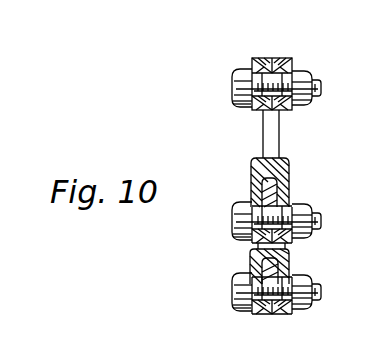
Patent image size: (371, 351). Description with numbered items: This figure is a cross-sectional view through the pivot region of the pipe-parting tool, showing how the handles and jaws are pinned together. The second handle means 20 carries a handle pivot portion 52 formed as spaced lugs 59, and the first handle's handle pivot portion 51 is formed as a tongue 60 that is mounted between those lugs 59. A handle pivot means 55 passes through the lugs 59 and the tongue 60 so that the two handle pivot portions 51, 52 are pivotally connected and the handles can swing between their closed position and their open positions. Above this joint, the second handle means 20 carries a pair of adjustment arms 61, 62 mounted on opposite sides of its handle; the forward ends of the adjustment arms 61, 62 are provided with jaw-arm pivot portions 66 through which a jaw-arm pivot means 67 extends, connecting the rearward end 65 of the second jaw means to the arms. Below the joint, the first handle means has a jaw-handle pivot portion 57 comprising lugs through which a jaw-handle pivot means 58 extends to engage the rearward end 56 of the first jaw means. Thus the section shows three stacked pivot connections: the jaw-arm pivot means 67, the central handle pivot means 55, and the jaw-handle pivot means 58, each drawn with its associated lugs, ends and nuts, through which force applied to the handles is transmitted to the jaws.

The second handle element means 20 is at (280, 136).
The handle pivot portion 51 is at (256, 251).
The handle pivot portion 52 is at (252, 166).
The handle pivot means 55 is at (242, 234).
The rearward end of the first jaw means 56 is at (272, 314).
The jaw-handle pivot portion 57 is at (292, 267).
The jaw-handle pivot means 58 is at (321, 295).
The spaced lugs 59 is at (256, 236).
The tongue 60 is at (266, 194).
The adjustment arm 61 is at (292, 64).
The adjustment arm 62 is at (252, 63).
The rearward end of the second jaw means 65 is at (272, 58).
The jaw-arm pivot portions 66 is at (254, 102).
The jaw-arm pivot means 67 is at (321, 86).